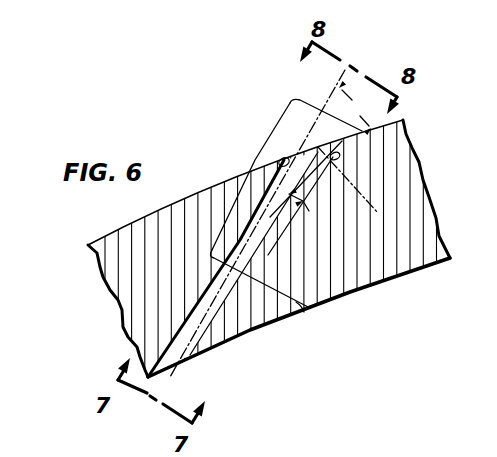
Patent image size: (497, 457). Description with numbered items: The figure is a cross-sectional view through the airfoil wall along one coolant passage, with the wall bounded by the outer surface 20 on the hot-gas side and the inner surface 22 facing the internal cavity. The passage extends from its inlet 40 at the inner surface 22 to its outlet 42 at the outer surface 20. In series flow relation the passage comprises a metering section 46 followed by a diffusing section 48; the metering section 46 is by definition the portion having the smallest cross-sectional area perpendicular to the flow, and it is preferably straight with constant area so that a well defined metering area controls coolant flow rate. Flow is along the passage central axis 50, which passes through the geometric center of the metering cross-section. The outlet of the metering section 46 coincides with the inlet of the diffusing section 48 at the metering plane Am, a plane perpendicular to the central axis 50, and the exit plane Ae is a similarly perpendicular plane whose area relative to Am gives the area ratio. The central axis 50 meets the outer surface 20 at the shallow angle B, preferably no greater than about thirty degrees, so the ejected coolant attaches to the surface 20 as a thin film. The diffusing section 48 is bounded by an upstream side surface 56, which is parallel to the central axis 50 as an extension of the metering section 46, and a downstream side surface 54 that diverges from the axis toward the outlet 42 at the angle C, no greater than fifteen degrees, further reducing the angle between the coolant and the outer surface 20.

The outer surface 20 is at (132, 230).
The inner surface 22 is at (379, 283).
The inlet 40 is at (176, 364).
The outlet 42 is at (312, 143).
The metering section 46 is at (240, 312).
The diffusing section 48 is at (262, 161).
The passage central axis 50 is at (332, 108).
The downstream side surface 54 is at (341, 156).
The upstream side surface 56 is at (284, 158).
The angle B is at (355, 108).
The angle C is at (304, 208).
The exit plane Ae is at (358, 196).
The metering plane Am is at (307, 312).